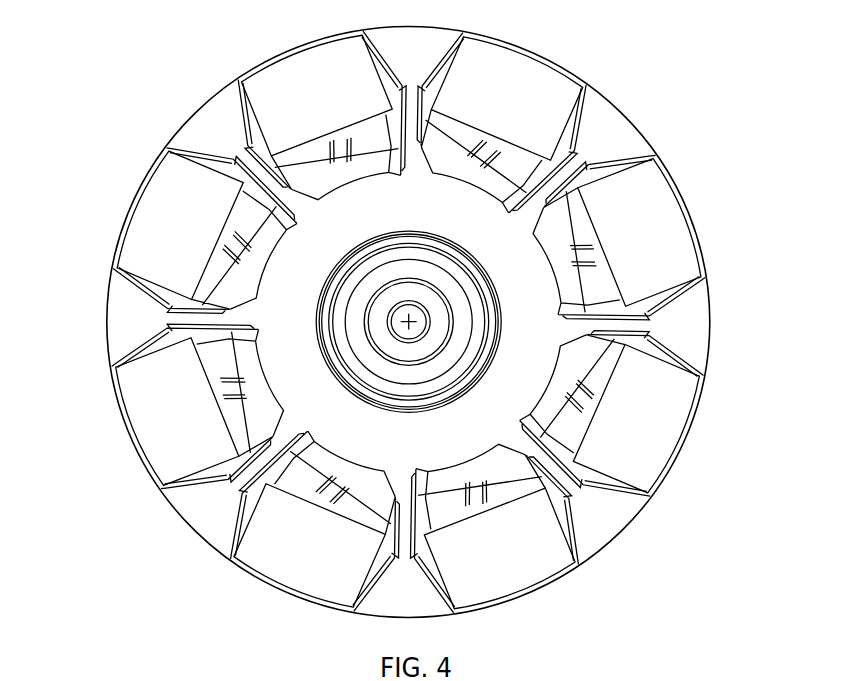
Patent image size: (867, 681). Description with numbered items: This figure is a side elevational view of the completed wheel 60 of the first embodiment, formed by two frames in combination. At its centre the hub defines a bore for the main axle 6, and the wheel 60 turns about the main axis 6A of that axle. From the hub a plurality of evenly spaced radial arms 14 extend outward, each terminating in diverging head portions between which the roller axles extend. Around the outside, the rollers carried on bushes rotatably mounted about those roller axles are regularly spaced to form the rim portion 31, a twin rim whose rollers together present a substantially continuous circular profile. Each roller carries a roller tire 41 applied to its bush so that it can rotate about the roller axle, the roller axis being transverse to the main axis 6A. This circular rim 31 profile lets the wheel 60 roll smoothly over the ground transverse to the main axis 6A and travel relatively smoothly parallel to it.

The main axle 6 is at (372, 291).
The main axis 6A is at (397, 332).
The radial arms 14 is at (608, 519).
The rim portion 31 is at (740, 333).
The roller tire 41 is at (529, 558).
The wheel 60 is at (419, 342).